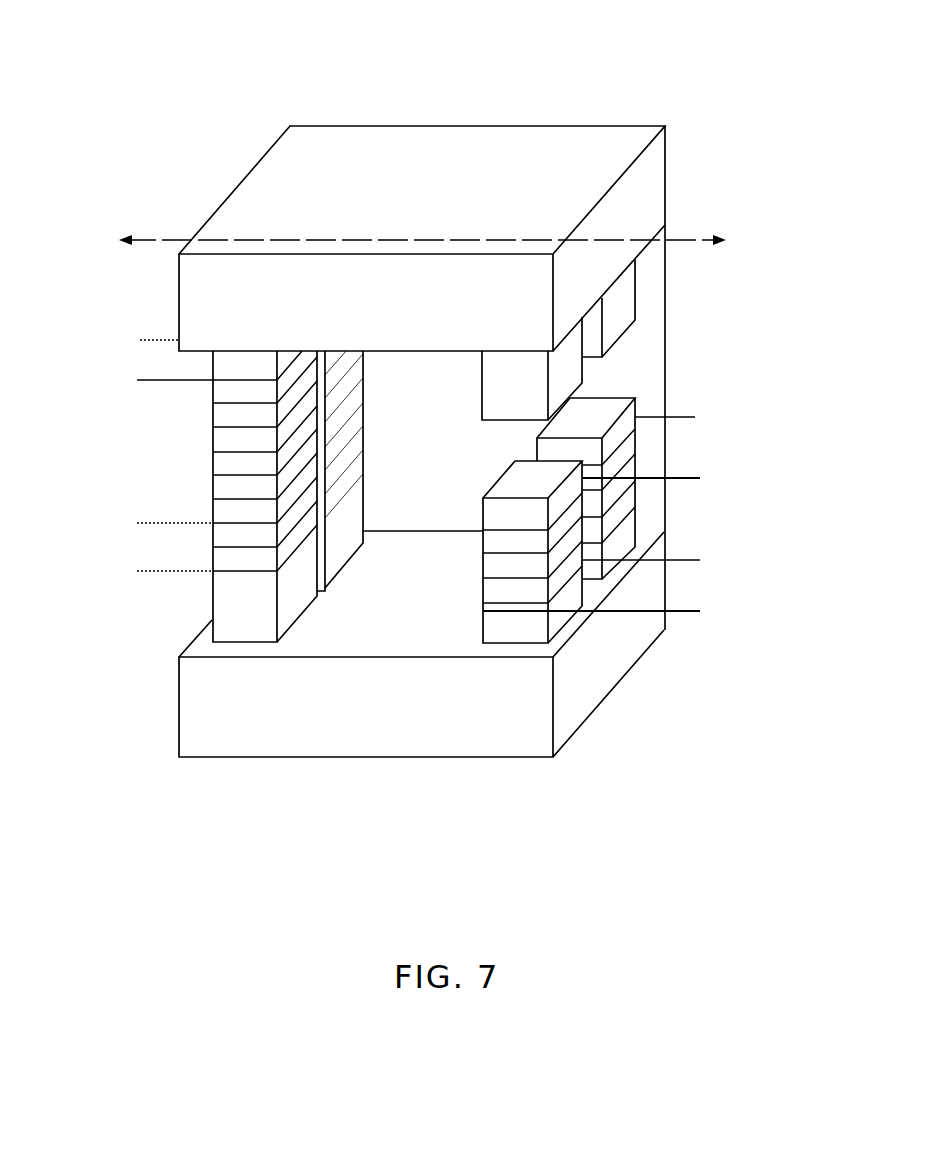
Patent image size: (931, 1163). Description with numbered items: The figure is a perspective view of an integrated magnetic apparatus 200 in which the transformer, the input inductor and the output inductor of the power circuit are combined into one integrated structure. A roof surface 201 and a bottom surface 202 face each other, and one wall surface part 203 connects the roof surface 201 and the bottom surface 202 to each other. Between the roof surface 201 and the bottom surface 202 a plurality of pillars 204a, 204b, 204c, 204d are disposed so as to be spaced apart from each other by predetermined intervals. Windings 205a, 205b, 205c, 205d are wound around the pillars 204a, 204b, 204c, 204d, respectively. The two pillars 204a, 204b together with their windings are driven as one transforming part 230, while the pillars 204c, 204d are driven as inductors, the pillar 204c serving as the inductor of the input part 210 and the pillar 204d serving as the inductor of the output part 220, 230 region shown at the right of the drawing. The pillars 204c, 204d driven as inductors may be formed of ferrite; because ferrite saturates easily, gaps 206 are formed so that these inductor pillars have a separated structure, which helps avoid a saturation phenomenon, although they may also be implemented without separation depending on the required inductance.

The semiconductor device 200 is at (581, 76).
The roof surface 201 is at (658, 176).
The bottom surface 202 is at (640, 633).
The wall surface part 203 is at (658, 285).
The pillar 204a is at (306, 602).
The pillar 204b is at (348, 550).
The pillar 204c is at (558, 623).
The pillar 204d is at (614, 552).
The winding 205a is at (152, 380).
The winding 205b is at (148, 338).
The winding 205c is at (700, 611).
The winding 205d is at (690, 417).
The gap region 206 is at (626, 363).
The input part 210 is at (311, 604).
The second pillar group 220 is at (585, 626).
The transforming part 230 is at (585, 626).